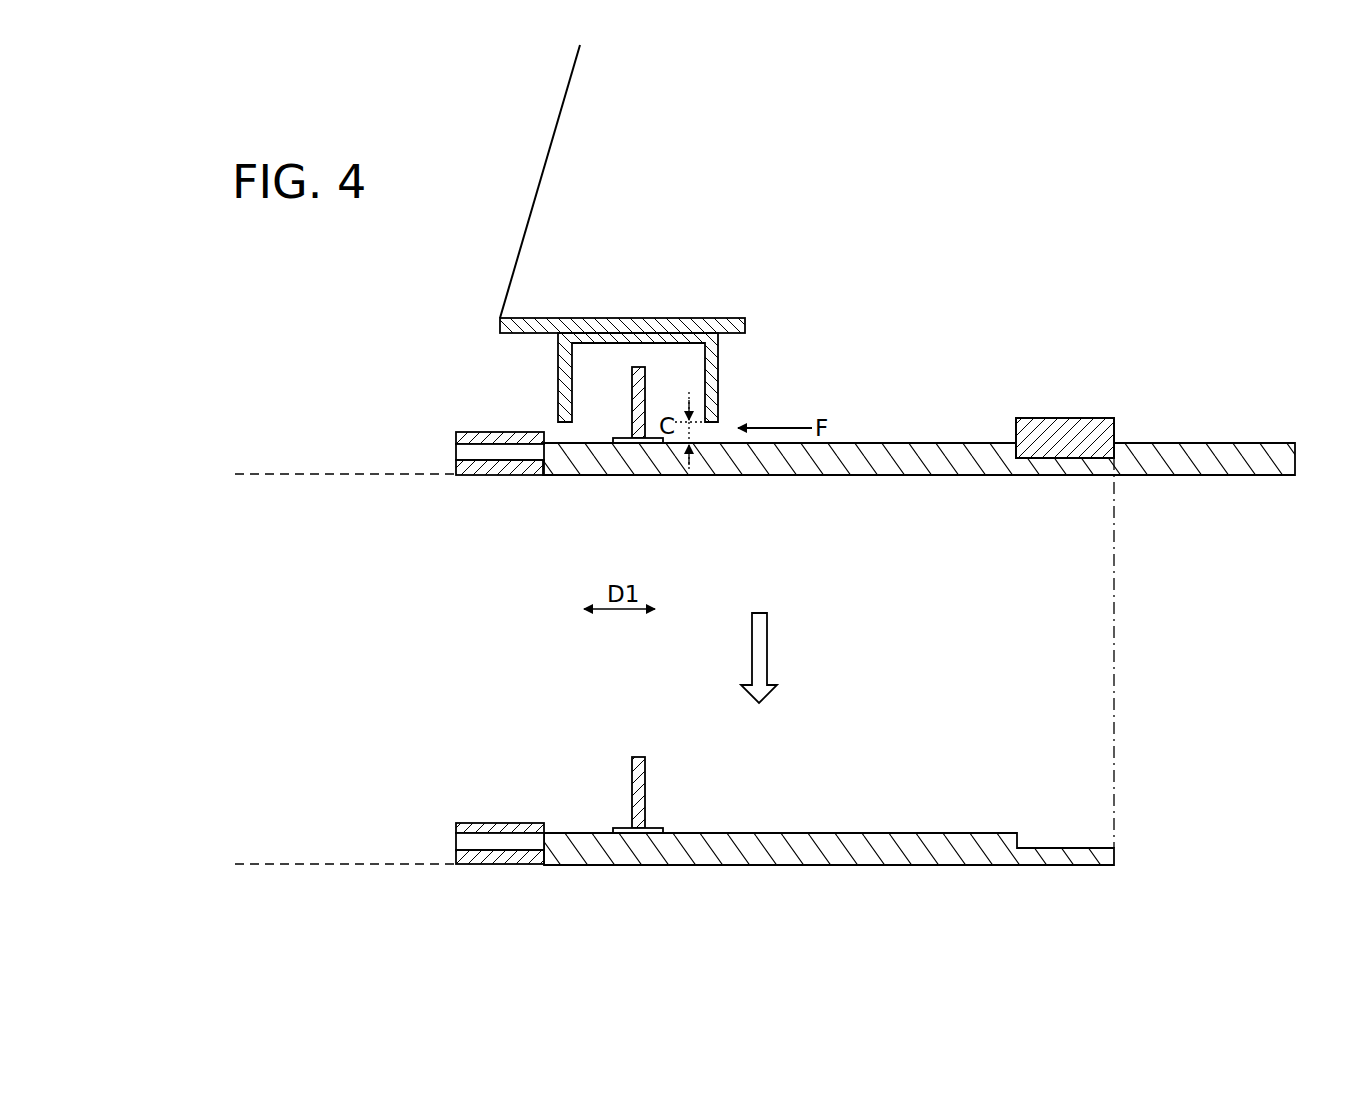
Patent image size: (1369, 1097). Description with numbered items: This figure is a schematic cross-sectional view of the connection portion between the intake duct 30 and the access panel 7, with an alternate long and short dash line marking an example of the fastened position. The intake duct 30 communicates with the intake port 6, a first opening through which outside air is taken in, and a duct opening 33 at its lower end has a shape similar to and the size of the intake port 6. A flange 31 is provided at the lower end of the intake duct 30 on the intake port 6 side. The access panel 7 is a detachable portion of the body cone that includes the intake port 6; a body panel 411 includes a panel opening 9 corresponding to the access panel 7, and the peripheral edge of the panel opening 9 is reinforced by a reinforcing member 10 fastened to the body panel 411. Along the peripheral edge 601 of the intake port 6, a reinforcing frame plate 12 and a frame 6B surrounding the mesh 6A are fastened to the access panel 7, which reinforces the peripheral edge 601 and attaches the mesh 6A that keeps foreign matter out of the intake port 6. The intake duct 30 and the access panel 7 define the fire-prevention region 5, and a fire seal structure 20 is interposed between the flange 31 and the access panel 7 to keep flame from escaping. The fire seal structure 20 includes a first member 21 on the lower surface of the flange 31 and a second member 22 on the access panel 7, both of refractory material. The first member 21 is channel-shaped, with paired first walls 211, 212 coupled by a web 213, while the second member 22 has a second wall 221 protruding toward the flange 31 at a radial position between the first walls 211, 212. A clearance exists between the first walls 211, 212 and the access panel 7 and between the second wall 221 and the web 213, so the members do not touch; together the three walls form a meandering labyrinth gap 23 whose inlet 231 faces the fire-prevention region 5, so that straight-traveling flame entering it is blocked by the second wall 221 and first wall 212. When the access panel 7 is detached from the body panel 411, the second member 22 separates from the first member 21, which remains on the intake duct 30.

The fire-prevention region 5 is at (973, 186).
The intake duct 30 is at (588, 108).
The labyrinth gap 23 is at (712, 320).
The web 213 is at (590, 318).
The duct opening 33 is at (478, 331).
The flange 31 is at (681, 384).
The first member 21 is at (558, 364).
The first wall 212 is at (558, 398).
The first wall 211 is at (718, 376).
The fire seal structure 20 is at (748, 393).
The second member 22 is at (632, 396).
The second wall 221 is at (645, 385).
The access panel 7 is at (903, 476).
The body panel 411 is at (1222, 476).
The panel opening 9 is at (1016, 454).
The inlet 231 is at (712, 437).
The reinforcing member 10 is at (1060, 418).
The reinforcing frame plate 12 is at (467, 432).
The peripheral edge 601 is at (466, 477).
The frame 6B is at (525, 477).
The mesh 6A is at (293, 477).
The intake port 6 is at (372, 480).